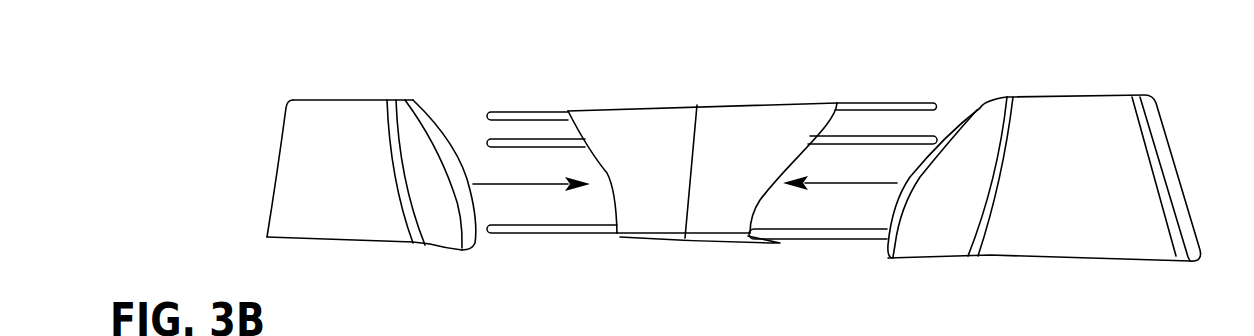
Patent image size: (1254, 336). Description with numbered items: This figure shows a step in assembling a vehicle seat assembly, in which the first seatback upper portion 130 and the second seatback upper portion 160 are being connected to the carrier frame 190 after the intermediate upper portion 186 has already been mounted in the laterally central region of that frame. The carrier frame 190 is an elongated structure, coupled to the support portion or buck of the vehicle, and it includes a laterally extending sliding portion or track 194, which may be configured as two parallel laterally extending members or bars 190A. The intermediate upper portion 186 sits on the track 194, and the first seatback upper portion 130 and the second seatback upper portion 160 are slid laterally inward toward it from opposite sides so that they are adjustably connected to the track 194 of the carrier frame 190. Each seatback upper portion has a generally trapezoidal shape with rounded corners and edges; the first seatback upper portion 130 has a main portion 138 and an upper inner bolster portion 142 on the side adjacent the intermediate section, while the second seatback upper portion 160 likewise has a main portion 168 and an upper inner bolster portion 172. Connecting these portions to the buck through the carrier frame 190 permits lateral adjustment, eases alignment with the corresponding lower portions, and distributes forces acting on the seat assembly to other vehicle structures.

The first seatback upper portion 130 is at (334, 193).
The main portion 138 is at (315, 213).
The upper inner bolster portion 142 is at (440, 215).
The track 194 is at (500, 170).
The intermediate upper portion 186 is at (658, 120).
The carrier frame 190 is at (882, 131).
The laterally extending members 190A is at (883, 135).
The second seatback upper portion 160 is at (1060, 185).
The upper inner bolster portion 172 is at (935, 208).
The main portion 168 is at (1087, 233).